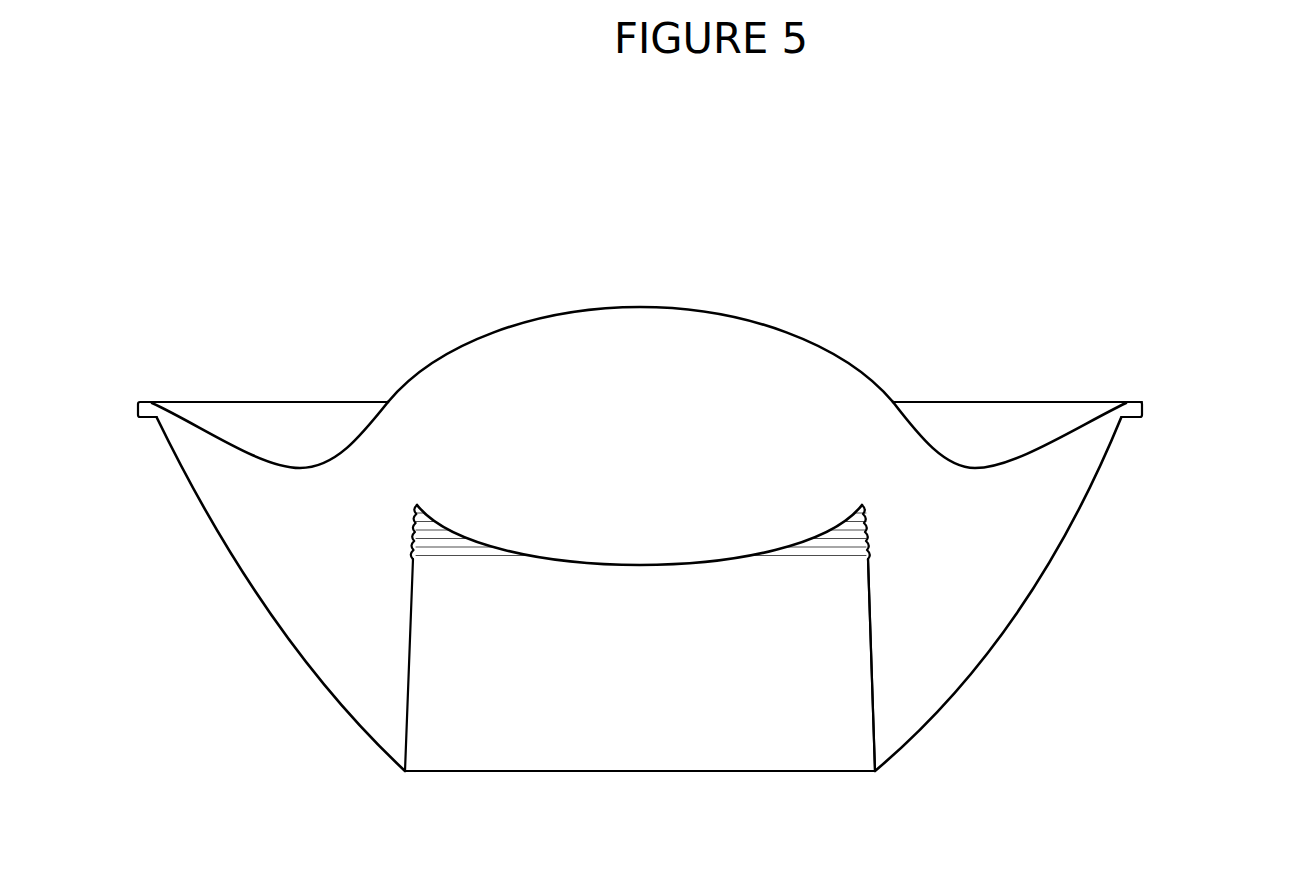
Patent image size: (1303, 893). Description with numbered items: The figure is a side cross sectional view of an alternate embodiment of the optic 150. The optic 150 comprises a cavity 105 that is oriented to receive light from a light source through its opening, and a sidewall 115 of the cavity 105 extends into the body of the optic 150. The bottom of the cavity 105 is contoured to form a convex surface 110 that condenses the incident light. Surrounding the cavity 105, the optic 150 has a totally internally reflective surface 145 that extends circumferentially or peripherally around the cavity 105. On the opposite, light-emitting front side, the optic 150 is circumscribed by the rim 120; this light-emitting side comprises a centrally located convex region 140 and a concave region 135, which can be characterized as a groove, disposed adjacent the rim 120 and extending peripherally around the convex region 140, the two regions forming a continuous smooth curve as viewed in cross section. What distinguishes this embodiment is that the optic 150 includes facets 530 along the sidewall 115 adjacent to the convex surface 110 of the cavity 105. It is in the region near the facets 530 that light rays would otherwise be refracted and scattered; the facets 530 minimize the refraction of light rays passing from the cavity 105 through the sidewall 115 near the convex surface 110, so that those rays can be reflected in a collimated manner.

The cavity 105 is at (540, 638).
The convex surface 110 is at (647, 565).
The sidewall 115 is at (867, 609).
The rim 120 is at (1142, 412).
The concave region 135 is at (978, 406).
The convex region 140 is at (700, 308).
The totally internally reflective surface 145 is at (1080, 513).
The optic 150 is at (702, 594).
The facets 530 is at (378, 538).